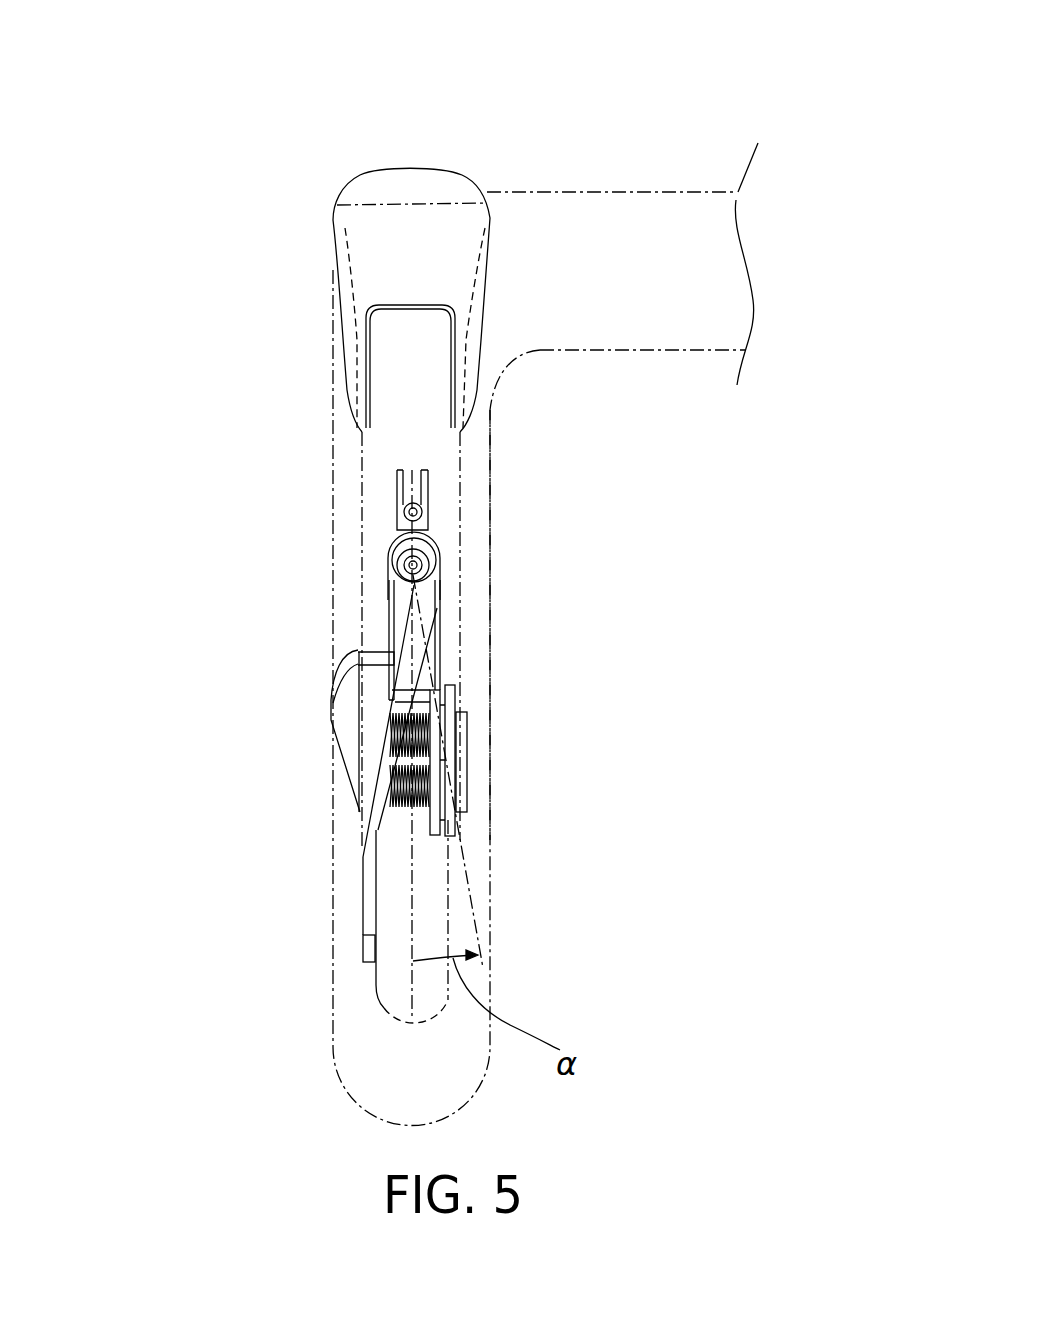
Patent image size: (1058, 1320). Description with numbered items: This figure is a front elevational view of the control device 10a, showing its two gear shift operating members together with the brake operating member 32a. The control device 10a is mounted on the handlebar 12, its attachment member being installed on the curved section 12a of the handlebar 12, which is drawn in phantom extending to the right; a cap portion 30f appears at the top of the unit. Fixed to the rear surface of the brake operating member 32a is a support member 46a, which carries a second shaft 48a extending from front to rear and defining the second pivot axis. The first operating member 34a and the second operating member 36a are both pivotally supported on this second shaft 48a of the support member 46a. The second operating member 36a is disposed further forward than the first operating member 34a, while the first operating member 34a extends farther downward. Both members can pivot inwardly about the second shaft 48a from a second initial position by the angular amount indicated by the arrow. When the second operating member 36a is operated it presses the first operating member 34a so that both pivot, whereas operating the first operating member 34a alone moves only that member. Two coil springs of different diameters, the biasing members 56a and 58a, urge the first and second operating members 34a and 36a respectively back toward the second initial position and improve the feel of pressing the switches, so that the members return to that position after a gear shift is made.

The control device 10a is at (331, 181).
The handlebar 12 is at (652, 148).
The curved section 12a is at (490, 461).
The cap of base member 30f is at (341, 256).
The brake operating member 32a is at (362, 469).
The first operating member 34a is at (366, 845).
The second operating member 36a is at (332, 708).
The support member 46a is at (398, 518).
The second shaft 48a is at (440, 548).
The biasing member 56a is at (392, 759).
The biasing member 58a is at (398, 712).